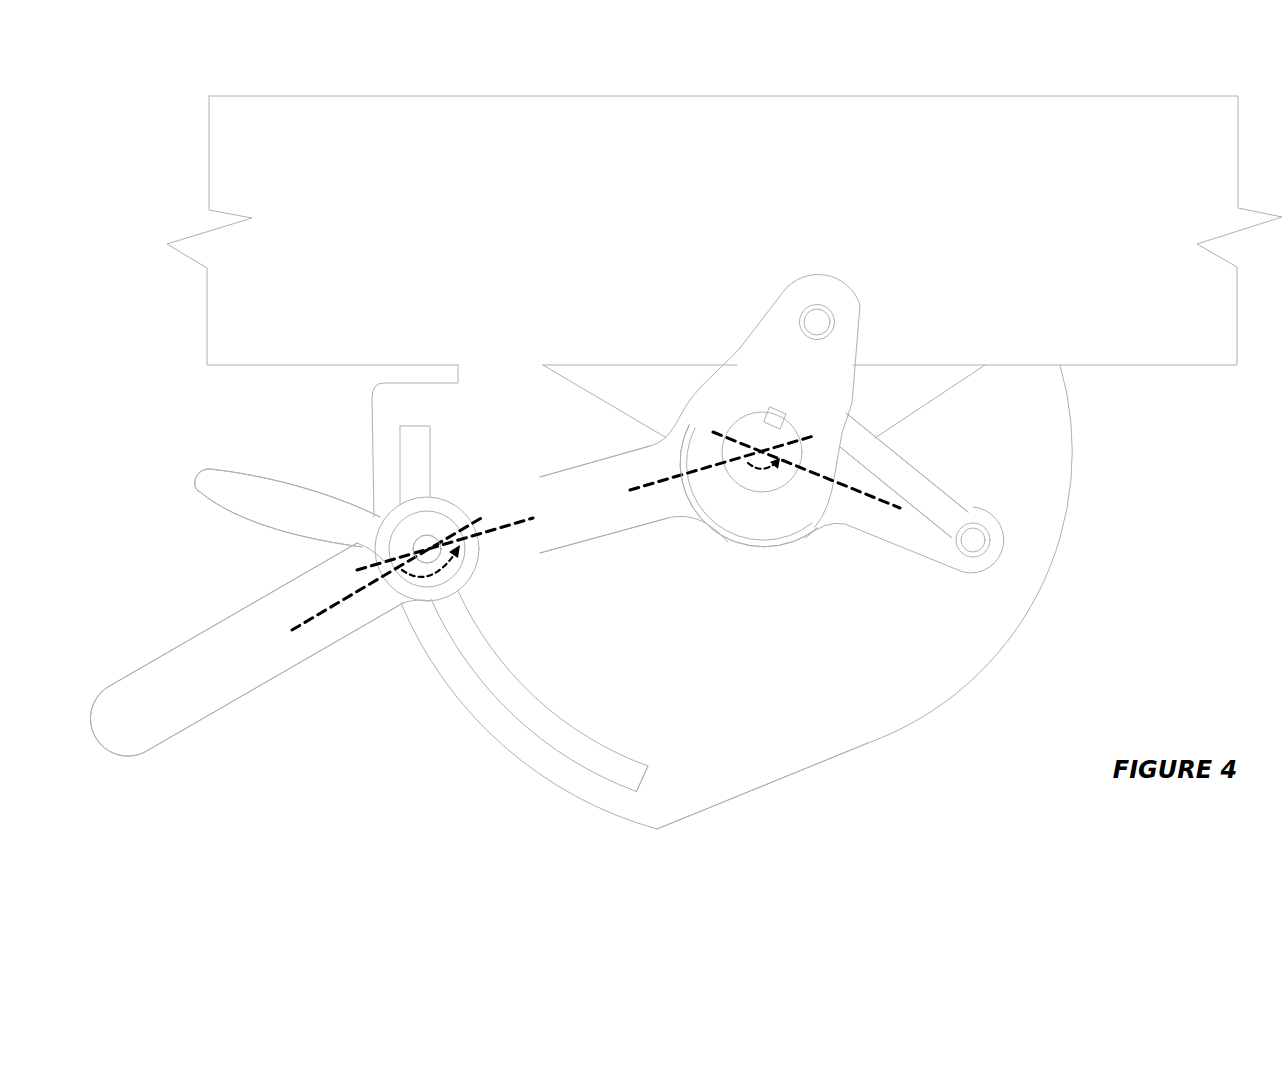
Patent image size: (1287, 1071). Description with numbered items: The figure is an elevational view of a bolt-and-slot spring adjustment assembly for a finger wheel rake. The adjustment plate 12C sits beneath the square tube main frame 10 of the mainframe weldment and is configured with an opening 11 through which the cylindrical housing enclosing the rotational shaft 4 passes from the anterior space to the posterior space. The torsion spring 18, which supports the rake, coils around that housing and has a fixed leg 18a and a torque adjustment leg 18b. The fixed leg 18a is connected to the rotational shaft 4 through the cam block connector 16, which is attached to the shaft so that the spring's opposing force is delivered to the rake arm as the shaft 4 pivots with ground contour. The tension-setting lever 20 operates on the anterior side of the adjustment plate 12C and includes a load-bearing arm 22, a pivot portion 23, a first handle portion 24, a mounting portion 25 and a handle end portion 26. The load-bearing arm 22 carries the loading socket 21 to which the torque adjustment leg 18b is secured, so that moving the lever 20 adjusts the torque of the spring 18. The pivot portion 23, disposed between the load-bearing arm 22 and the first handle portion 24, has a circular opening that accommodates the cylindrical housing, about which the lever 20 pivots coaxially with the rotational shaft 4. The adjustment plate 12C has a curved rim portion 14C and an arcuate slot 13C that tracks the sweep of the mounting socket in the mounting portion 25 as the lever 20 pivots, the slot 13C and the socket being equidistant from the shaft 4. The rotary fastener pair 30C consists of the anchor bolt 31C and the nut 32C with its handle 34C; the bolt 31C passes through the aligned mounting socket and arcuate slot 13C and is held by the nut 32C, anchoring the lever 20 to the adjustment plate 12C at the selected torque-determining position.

The main frame 10 is at (466, 219).
The opening 11 is at (893, 375).
The rotational shaft 4 is at (753, 432).
The cam block connector 16 is at (779, 386).
The torsion spring 18 is at (912, 490).
The fixed leg 18a is at (817, 322).
The torque adjustment leg 18b is at (968, 537).
The loading socket 21 is at (978, 556).
The load-bearing arm 22 is at (908, 528).
The pivot portion 23 is at (745, 550).
The first handle portion 24 is at (604, 499).
The mounting portion 25 is at (398, 508).
The handle end portion 26 is at (260, 649).
The lever 20 is at (215, 622).
The adjustment plate 12C is at (682, 662).
The arcuate slot 13C is at (593, 753).
The curved rim portion 14C is at (492, 733).
The rotary fastener pair 30C is at (288, 476).
The anchor bolt 31C is at (428, 538).
The nut 32C is at (407, 575).
The handle 34C is at (287, 508).